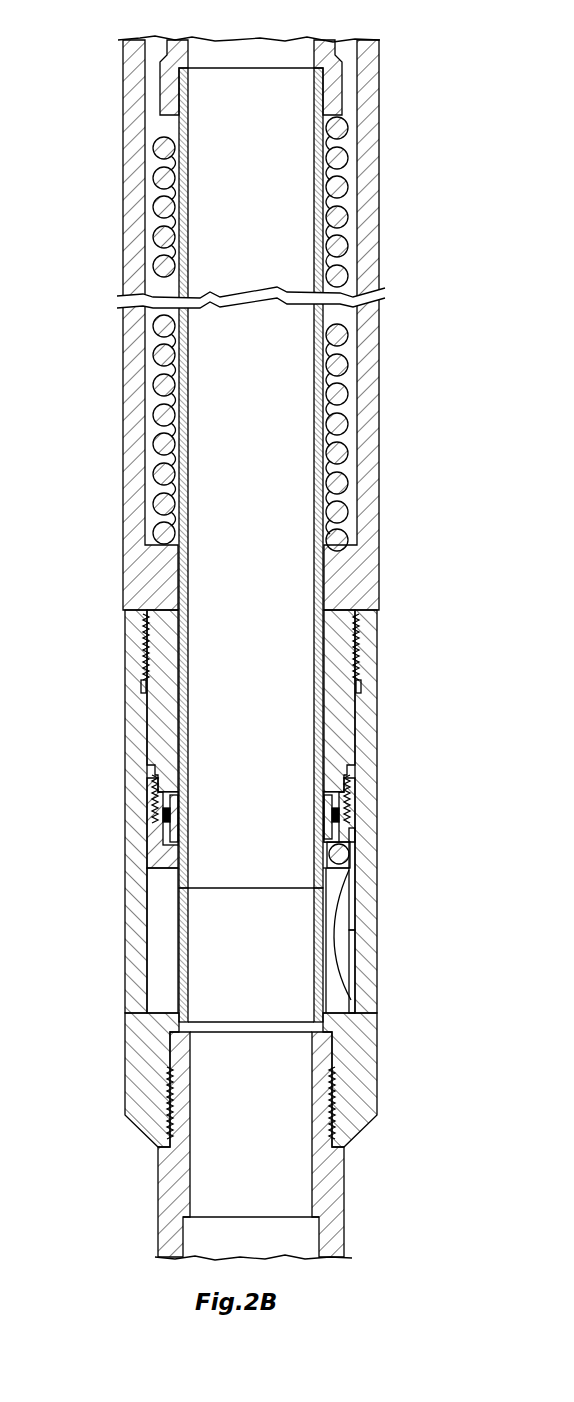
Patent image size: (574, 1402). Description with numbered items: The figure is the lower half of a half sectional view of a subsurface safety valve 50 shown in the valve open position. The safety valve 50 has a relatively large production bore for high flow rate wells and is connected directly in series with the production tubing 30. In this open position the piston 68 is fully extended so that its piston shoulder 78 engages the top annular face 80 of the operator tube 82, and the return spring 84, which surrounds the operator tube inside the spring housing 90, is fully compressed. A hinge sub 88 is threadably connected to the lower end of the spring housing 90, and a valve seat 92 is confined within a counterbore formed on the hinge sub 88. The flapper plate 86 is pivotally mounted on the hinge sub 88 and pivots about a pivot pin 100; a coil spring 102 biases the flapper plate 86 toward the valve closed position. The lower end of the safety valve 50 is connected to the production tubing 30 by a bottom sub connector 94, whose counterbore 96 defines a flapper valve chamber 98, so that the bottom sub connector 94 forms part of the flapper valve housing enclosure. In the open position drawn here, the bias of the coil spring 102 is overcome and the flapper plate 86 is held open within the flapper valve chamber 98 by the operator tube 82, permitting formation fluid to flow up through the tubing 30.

The production tubing 30 is at (347, 1188).
The subsurface safety valve 50 is at (408, 182).
The piston 68 is at (335, 50).
The piston shoulder 78 is at (188, 80).
The top annular face 80 is at (267, 68).
The operator tube 82 is at (190, 950).
The return spring 84 is at (345, 380).
The flapper plate 86 is at (345, 950).
The hinge sub 88 is at (155, 858).
The spring housing 90 is at (123, 92).
The valve seat 92 is at (188, 815).
The bottom sub connector 94 is at (365, 1088).
The counterbore 96 is at (357, 1010).
The flapper valve chamber 98 is at (160, 980).
The pivot pin 100 is at (350, 850).
The coil spring 102 is at (353, 858).